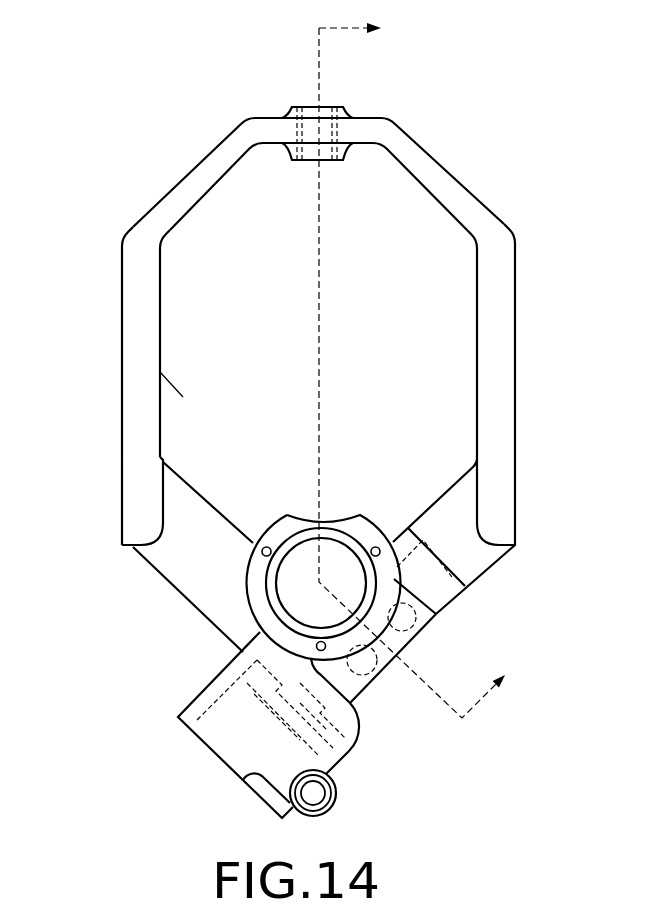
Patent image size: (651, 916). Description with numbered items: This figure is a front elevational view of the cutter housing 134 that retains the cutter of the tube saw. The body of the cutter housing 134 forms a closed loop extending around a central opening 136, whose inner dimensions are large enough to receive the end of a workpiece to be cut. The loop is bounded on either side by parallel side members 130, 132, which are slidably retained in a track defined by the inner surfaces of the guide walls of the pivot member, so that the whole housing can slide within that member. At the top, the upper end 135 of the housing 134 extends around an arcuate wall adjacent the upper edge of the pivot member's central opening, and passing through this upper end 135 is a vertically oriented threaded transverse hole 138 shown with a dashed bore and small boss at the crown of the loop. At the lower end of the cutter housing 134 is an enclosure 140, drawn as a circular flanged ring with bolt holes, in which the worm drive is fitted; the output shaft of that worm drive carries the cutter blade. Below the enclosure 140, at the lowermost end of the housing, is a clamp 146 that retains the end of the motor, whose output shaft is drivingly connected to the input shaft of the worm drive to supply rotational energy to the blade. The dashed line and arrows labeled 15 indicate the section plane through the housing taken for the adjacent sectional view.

The section line 15- 15 is at (423, 366).
The side member 130 is at (122, 283).
The side member 132 is at (515, 247).
The cutter housing 134 is at (170, 591).
The upper end 135 is at (443, 161).
The central opening 136 is at (183, 397).
The threaded transverse hole 138 is at (309, 101).
The enclosure 140 is at (243, 652).
The clamp 146 is at (209, 748).